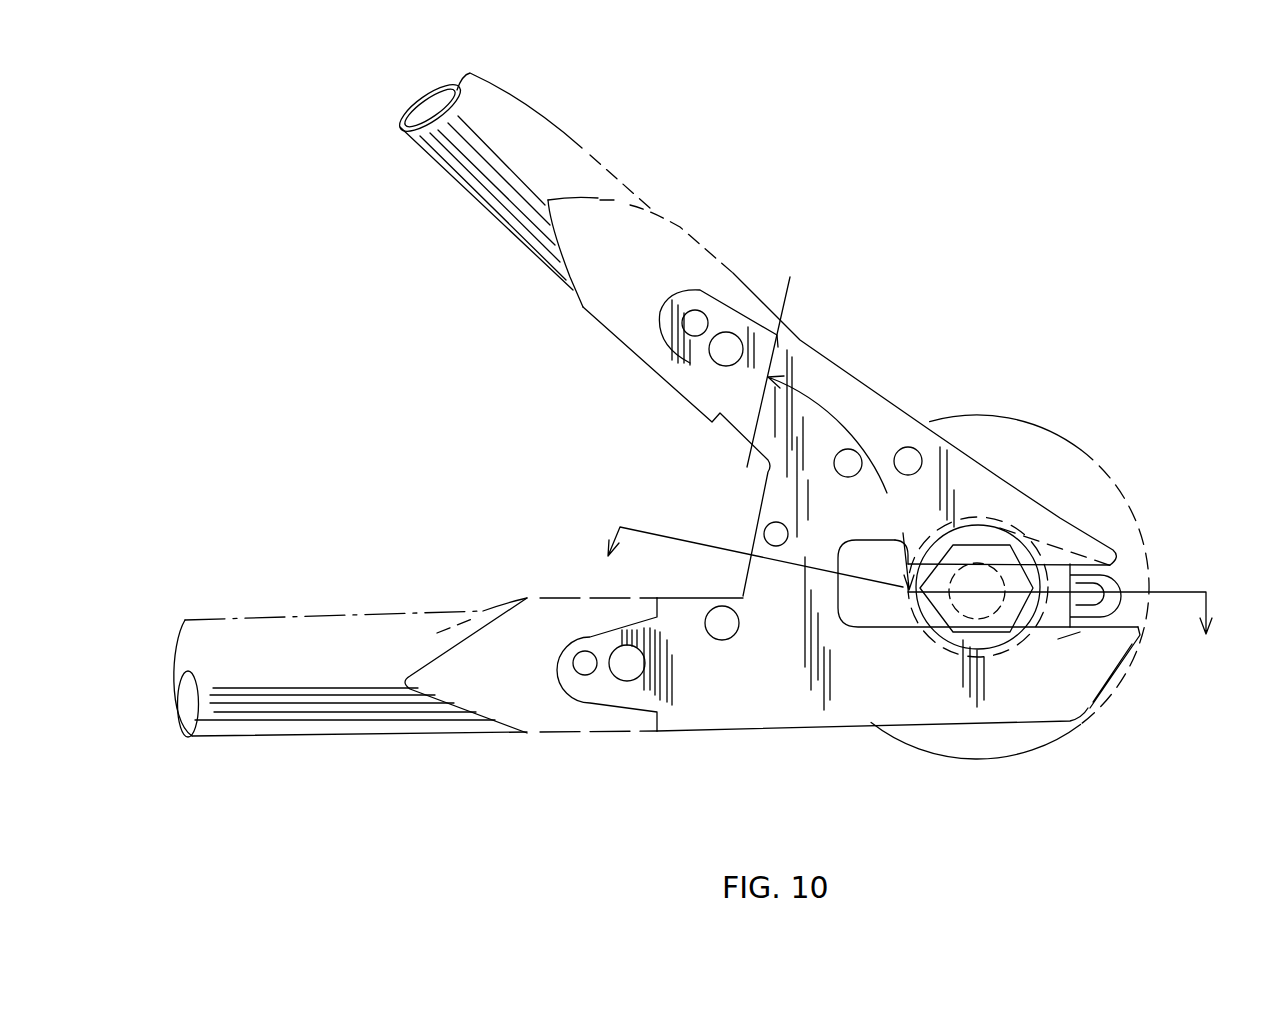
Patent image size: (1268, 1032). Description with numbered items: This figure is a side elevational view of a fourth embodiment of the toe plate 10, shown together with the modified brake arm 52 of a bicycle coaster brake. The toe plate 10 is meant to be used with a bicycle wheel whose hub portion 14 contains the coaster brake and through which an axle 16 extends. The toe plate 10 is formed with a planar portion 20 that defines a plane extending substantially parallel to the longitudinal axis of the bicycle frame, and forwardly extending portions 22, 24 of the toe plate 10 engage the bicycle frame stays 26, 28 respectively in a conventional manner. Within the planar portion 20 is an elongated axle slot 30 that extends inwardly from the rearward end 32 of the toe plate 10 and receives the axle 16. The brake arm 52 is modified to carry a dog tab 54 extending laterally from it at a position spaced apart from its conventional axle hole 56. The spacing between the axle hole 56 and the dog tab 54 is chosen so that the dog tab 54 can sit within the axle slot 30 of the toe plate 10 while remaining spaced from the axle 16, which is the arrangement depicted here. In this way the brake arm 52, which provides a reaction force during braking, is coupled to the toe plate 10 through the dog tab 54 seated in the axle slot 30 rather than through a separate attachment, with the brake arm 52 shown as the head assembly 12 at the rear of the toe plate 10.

The toe plate 10 is at (882, 501).
The head assembly 12 is at (932, 577).
The hub portion 14 is at (979, 413).
The axle 16 is at (978, 590).
The planar portion 20 is at (768, 683).
The forwardly extending portion 22 is at (718, 320).
The forwardly extending portion 24 is at (588, 681).
The bicycle frame stay 26 is at (530, 110).
The bicycle frame stay 28 is at (293, 733).
The axle slot 30 is at (903, 580).
The rearward end 32 is at (1090, 708).
The brake arm 52 is at (1073, 630).
The dog tab 54 is at (1117, 580).
The axle hole 56 is at (1045, 555).